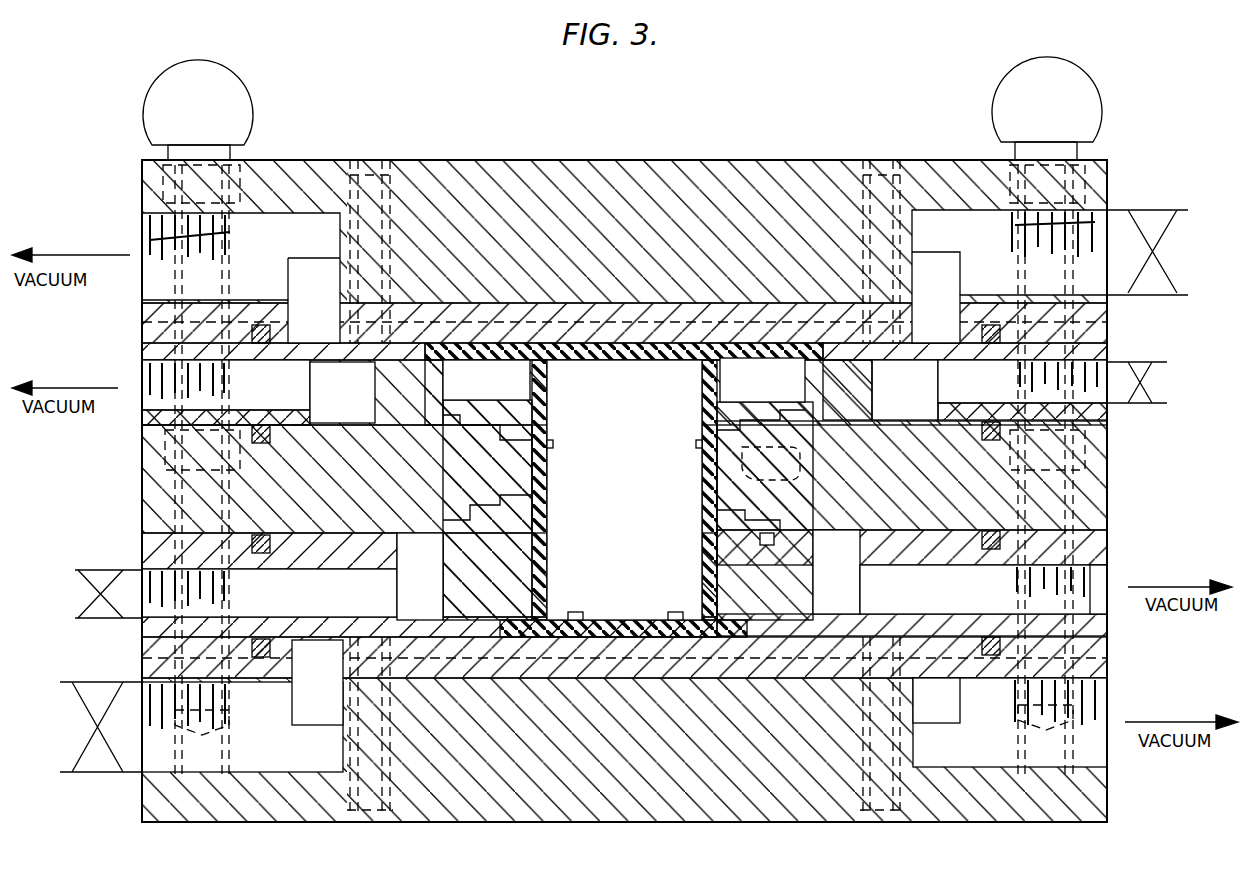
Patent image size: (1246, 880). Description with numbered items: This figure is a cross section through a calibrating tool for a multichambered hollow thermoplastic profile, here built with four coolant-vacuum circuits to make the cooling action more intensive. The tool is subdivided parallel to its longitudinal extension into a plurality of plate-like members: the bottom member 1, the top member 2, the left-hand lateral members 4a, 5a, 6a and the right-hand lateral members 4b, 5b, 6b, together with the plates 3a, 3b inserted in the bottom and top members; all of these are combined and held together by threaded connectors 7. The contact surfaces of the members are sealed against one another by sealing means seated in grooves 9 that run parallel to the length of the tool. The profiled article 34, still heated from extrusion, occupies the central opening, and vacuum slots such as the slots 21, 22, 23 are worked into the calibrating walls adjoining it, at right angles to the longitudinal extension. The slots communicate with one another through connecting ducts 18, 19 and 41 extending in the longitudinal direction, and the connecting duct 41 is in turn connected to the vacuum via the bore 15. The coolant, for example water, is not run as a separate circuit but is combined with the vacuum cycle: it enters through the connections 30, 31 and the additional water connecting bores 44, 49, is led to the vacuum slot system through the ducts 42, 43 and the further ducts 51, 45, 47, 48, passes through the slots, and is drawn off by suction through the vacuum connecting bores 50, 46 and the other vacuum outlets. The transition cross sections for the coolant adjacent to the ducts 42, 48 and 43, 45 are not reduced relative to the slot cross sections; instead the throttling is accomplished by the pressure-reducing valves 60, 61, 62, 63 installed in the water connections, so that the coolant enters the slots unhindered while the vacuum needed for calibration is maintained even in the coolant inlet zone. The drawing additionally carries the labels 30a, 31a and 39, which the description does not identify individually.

The bottom member 1 is at (350, 753).
The top member 2 is at (455, 176).
The inserted plate 3a is at (522, 672).
The inserted plate 3b is at (545, 305).
The left-hand lateral member 4a is at (148, 636).
The right-hand lateral member 4b is at (1094, 549).
The left-hand lateral member 5a is at (142, 472).
The right-hand lateral member 5b is at (1094, 477).
The left-hand lateral member 6a is at (143, 346).
The right-hand lateral member 6b is at (1107, 348).
The threaded connectors 7 is at (232, 108).
The grooves 9 is at (986, 441).
The bore 15 is at (972, 760).
The connecting duct 18 is at (856, 432).
The connecting duct 19 is at (770, 544).
The vacuum slot 21 is at (874, 366).
The vacuum slot 22 is at (771, 463).
The vacuum slot 23 is at (826, 596).
The coolant connection 30 is at (1186, 208).
The branch conduit 30a is at (1150, 404).
The coolant connection 31 is at (85, 773).
The branch outlet conduit 31a is at (83, 618).
The profiled article 34 is at (714, 366).
The base plate 39 is at (853, 838).
The connecting duct 41 is at (928, 708).
The duct 42 is at (292, 698).
The duct 43 is at (934, 264).
The water connecting bore 44 is at (1132, 362).
The duct 45 is at (926, 405).
The vacuum connecting bore 46 is at (1095, 590).
The duct 47 is at (840, 602).
The duct 48 is at (428, 604).
The water connecting bore 49 is at (160, 592).
The vacuum connecting bore 50 is at (143, 373).
The duct 51 is at (338, 412).
The pressure-reducing valve 60 is at (92, 700).
The pressure-reducing valve 61 is at (108, 578).
The pressure-reducing valve 62 is at (1150, 260).
The pressure-reducing valve 63 is at (1150, 372).